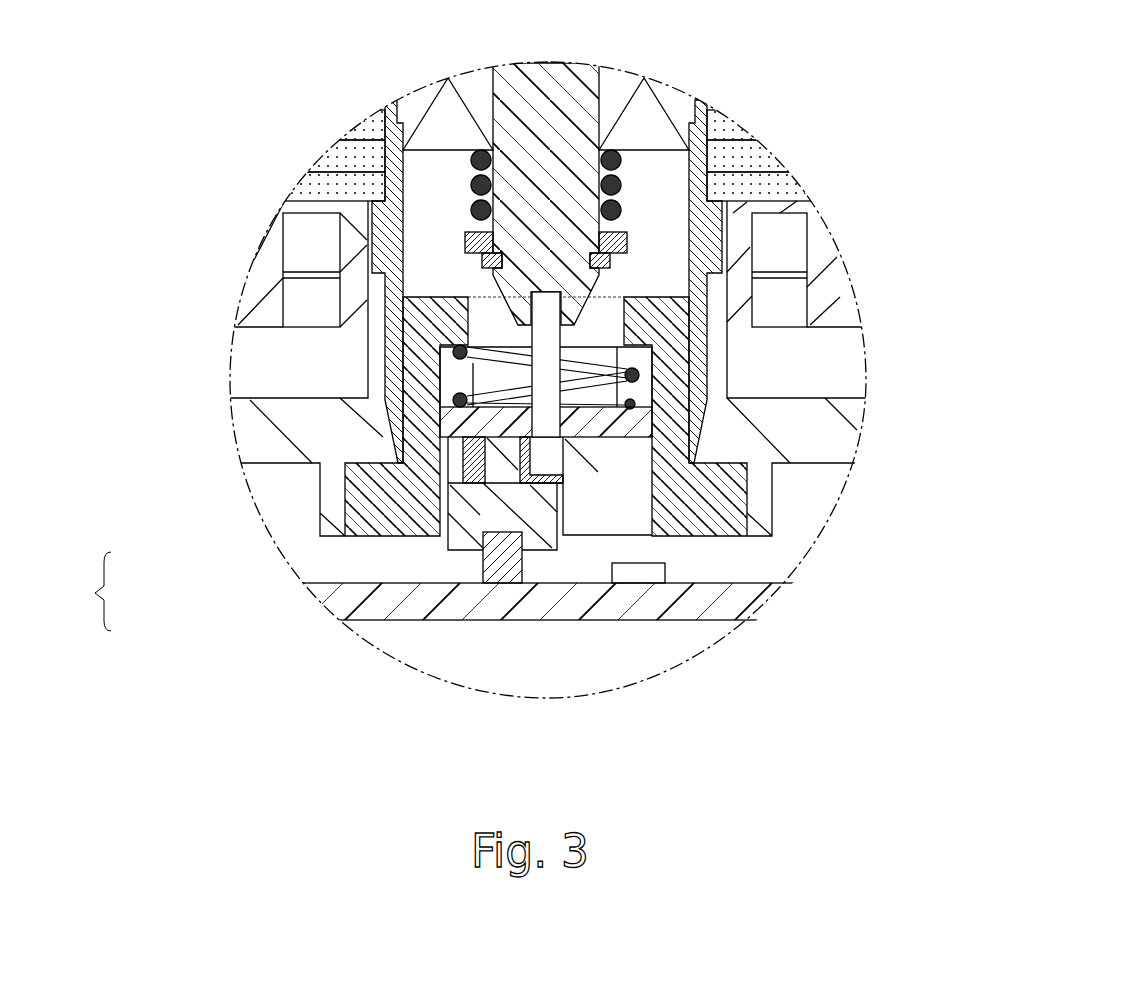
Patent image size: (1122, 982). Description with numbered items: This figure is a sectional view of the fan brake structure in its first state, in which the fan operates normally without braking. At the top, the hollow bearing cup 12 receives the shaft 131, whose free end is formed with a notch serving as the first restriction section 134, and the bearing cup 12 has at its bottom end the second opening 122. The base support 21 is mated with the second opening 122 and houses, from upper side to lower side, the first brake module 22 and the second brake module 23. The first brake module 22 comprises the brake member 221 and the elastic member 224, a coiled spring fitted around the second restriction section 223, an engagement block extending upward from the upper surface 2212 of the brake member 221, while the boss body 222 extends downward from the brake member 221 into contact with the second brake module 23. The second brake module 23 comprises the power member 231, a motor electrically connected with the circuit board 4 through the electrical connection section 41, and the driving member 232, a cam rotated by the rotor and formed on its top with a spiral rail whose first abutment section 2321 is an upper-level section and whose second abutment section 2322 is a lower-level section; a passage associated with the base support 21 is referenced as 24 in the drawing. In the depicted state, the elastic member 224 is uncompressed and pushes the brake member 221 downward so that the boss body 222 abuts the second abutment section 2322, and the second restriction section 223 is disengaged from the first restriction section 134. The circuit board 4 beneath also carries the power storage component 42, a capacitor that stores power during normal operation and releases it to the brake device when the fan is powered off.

The shaft 131 is at (572, 75).
The first restriction section 134 is at (505, 298).
The bearing cup 12 is at (713, 235).
The base support 21 is at (415, 372).
The inner body 24 is at (427, 396).
The driving member 232 is at (440, 535).
The first abutment section 2321 is at (330, 467).
The second abutment section 2322 is at (655, 510).
The boss body 222 is at (705, 431).
The second restriction section 223 is at (623, 297).
The upper surface 2212 is at (627, 397).
The elastic member 224 is at (455, 348).
The brake member 221 is at (627, 444).
The second opening 122 is at (553, 367).
The first brake module 22 is at (990, 343).
The power member 231 is at (445, 545).
The second brake module 23 is at (85, 591).
The circuit board 4 is at (750, 596).
The electrical connection section 41 is at (505, 570).
The power storage component 42 is at (645, 570).